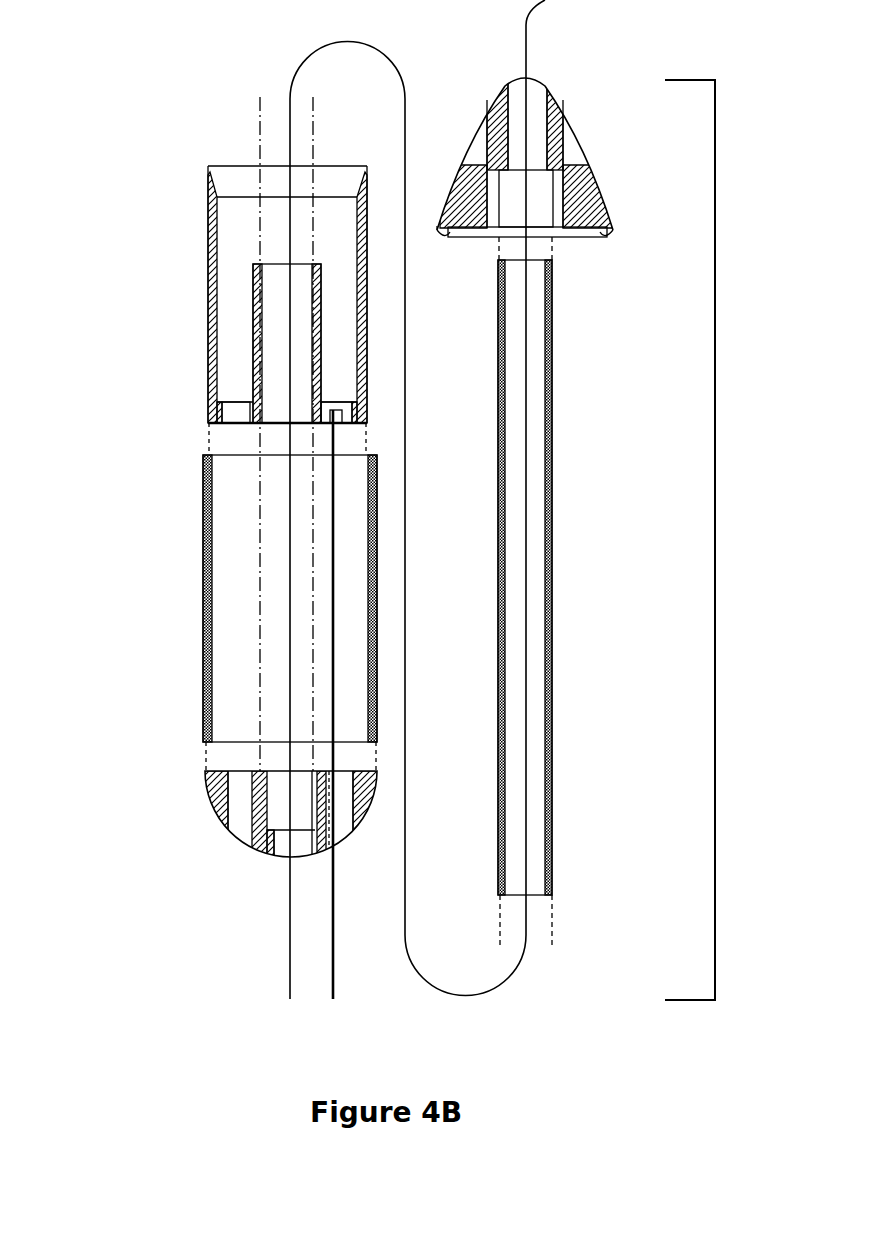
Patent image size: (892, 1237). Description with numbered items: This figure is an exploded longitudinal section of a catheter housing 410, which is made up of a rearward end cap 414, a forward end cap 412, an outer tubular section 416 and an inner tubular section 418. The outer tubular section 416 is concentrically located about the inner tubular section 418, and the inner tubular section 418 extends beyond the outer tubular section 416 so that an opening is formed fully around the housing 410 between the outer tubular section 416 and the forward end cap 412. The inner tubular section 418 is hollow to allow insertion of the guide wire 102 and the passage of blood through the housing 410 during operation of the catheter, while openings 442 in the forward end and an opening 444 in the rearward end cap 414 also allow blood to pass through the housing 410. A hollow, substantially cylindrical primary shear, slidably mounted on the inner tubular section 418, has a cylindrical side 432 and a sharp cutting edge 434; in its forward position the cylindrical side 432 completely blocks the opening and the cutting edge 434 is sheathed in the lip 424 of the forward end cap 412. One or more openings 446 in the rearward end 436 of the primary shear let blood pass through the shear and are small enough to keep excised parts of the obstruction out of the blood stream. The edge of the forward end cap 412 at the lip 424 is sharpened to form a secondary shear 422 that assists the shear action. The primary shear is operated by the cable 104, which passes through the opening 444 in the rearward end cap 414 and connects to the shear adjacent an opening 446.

The guide wire 102 is at (290, 952).
The cable 104 is at (335, 956).
The housing 410 is at (718, 540).
The forward end cap 412 is at (537, 145).
The rearward end cap 414 is at (270, 841).
The outer tubular section 416 is at (203, 580).
The inner tubular section 418 is at (553, 502).
The secondary shear 422 is at (446, 236).
The lip 424 is at (610, 229).
The cylindrical side 432 is at (217, 268).
The cutting edge 434 is at (208, 166).
The rearward end 436 is at (212, 421).
The openings 442 is at (480, 135).
The opening 444 is at (243, 838).
The openings 446 is at (235, 413).